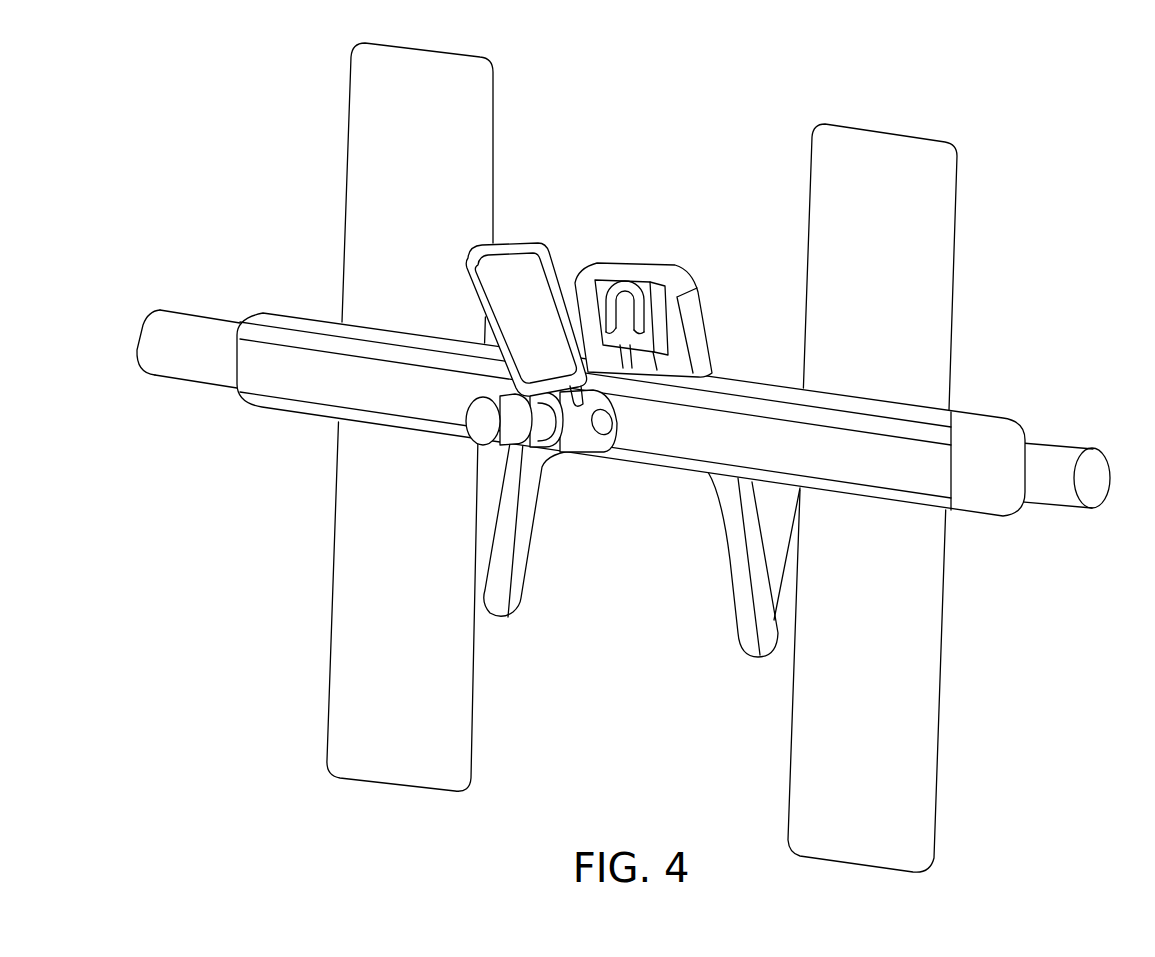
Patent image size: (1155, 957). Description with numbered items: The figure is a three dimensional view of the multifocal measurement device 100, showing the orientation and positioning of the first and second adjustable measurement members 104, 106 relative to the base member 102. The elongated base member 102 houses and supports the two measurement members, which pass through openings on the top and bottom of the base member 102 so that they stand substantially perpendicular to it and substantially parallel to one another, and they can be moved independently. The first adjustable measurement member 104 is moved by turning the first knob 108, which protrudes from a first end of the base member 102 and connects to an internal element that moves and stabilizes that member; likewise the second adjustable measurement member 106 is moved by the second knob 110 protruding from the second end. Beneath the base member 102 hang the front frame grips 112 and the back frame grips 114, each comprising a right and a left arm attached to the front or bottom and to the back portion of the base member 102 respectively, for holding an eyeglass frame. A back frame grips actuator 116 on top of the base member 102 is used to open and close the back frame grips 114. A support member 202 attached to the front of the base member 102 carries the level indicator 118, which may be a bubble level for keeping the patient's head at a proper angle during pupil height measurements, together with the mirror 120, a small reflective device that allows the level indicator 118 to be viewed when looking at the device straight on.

The multifocal measurement device 100 is at (185, 108).
The base member 102 is at (296, 313).
The first adjustable measurement member 104 is at (360, 156).
The second adjustable measurement member 106 is at (923, 154).
The first knob 108 is at (162, 373).
The second knob 110 is at (1065, 502).
The front frame grips 112 is at (727, 513).
The back frame grips 114 is at (780, 583).
The back frame grips actuator 116 is at (645, 268).
The level indicator 118 is at (478, 430).
The mirror 120 is at (509, 250).
The support member 202 is at (582, 445).